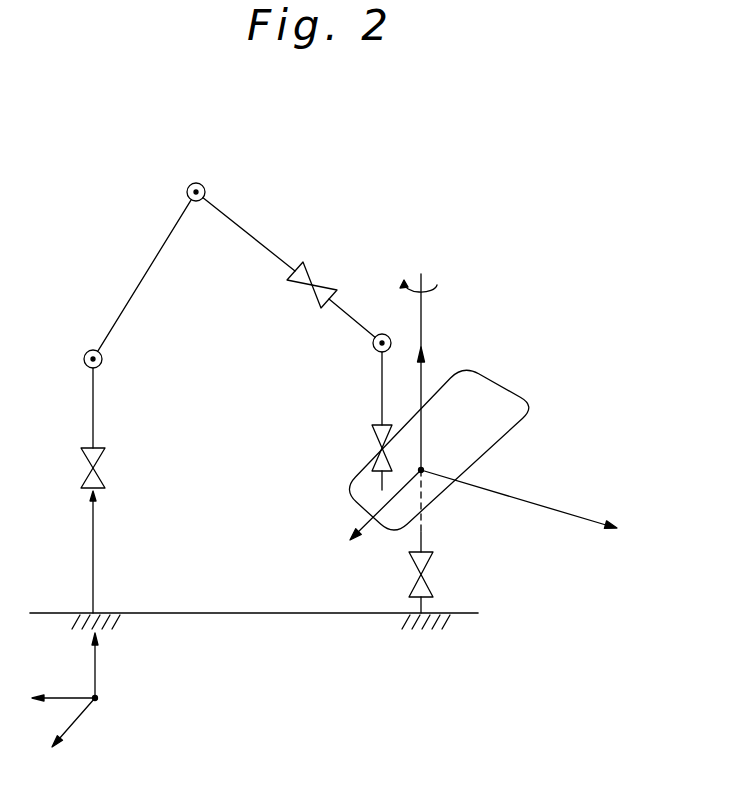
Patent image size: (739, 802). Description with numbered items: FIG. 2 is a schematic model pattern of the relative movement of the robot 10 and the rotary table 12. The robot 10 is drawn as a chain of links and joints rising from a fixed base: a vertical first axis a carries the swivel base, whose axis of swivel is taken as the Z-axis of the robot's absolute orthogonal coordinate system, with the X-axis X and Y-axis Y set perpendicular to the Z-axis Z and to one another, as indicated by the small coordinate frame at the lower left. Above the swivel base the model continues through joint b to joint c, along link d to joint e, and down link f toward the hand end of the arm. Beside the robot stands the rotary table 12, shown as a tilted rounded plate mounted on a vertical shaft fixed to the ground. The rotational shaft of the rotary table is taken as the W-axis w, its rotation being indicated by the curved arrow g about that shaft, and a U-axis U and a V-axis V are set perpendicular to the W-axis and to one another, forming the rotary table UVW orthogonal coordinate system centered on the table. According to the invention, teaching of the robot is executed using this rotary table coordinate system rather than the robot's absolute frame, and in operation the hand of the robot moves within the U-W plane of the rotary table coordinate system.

The robot 10 is at (140, 260).
The rotary table 12 is at (535, 381).
The a-axis a is at (93, 403).
The b-axis b is at (86, 350).
The c-axis c is at (196, 179).
The d-axis d is at (257, 240).
The e-axis e is at (385, 335).
The f-axis f is at (382, 394).
The g-axis g is at (422, 276).
The W-axis w is at (429, 372).
The U-axis U is at (529, 505).
The V-axis V is at (379, 518).
The X-axis X is at (64, 734).
The Y-axis Y is at (52, 698).
The Z-axis Z is at (102, 665).